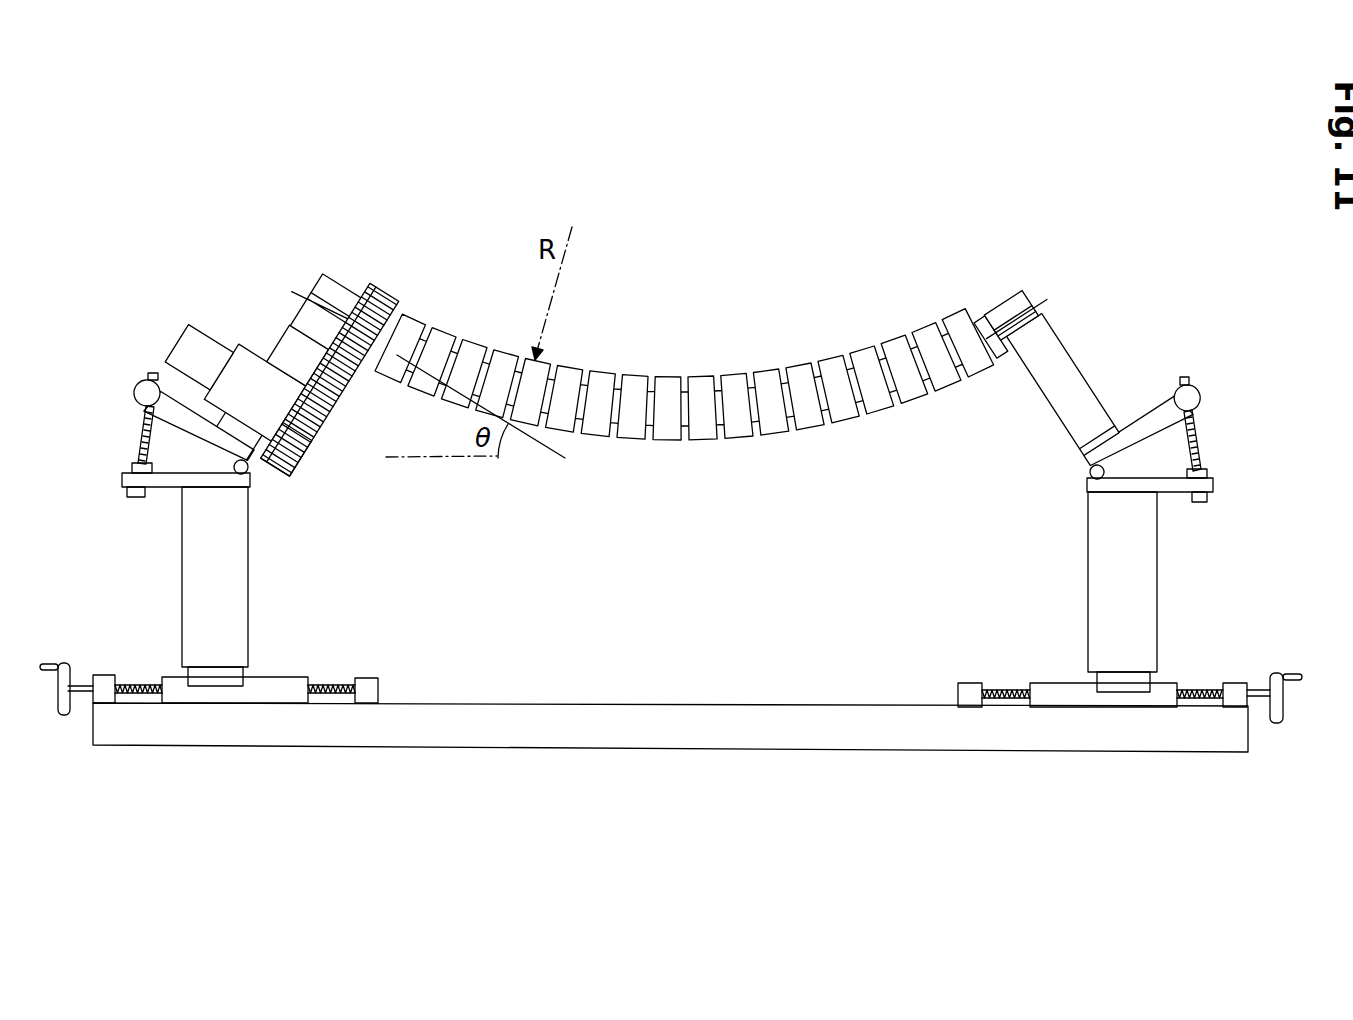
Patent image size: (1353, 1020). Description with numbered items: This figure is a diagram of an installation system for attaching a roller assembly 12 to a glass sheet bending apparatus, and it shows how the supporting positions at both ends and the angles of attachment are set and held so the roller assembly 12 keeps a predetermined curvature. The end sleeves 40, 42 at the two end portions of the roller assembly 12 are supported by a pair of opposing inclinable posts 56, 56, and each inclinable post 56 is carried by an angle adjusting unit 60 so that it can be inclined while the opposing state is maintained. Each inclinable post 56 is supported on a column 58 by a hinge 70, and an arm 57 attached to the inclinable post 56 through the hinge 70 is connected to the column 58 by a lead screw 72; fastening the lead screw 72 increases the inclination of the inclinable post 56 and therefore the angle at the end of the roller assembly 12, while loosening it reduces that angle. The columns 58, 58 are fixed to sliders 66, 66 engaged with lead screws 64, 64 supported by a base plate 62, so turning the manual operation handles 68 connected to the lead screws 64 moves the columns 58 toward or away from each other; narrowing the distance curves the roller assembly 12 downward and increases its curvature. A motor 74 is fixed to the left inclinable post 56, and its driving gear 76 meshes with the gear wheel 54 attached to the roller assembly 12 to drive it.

The roller assembly 12 is at (677, 348).
The end sleeve 40 is at (1003, 306).
The end sleeve 42 is at (333, 290).
The gear wheel 54 is at (386, 282).
The inclinable post 56 is at (287, 347).
The arm 57 is at (178, 413).
The column 58 is at (236, 590).
The angle adjusting unit 60 is at (136, 423).
The base plate 62 is at (587, 713).
The lead screw 64 is at (331, 680).
The slider 66 is at (277, 678).
The manual operation handle 68 is at (64, 661).
The hinge 70 is at (258, 475).
The lead screw 72 is at (132, 443).
The motor 74 is at (247, 366).
The driving gear 76 is at (312, 452).